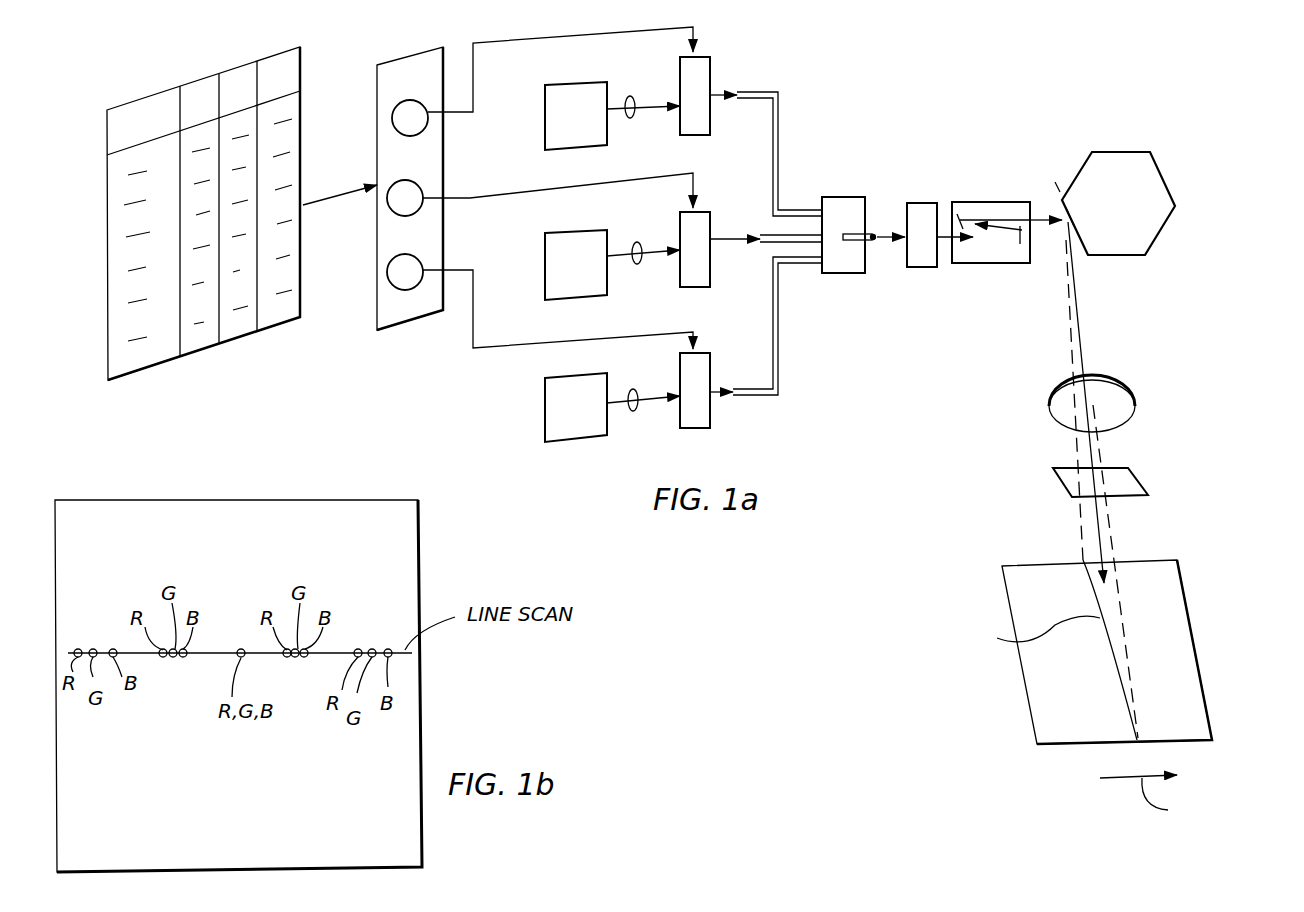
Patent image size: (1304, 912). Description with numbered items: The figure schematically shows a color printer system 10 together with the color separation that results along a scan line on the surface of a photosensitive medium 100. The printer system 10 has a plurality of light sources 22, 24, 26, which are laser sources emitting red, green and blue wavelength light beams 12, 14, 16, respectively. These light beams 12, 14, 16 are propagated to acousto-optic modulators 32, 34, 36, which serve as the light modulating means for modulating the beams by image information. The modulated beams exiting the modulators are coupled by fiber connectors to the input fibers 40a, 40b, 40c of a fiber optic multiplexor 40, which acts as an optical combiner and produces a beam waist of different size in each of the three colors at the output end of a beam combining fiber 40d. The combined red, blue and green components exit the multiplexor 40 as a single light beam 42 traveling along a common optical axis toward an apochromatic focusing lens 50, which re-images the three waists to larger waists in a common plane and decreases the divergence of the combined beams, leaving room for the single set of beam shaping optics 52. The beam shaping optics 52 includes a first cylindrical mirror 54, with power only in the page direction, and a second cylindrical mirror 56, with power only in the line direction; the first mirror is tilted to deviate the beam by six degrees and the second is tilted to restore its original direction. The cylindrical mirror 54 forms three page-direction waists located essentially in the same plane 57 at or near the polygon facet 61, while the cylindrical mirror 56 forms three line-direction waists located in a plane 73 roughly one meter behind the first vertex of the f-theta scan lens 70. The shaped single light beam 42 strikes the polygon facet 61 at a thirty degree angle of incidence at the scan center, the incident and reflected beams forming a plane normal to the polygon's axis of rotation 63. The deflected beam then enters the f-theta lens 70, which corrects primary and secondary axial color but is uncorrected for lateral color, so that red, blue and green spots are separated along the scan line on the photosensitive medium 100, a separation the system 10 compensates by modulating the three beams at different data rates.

In FIG. 1A, the printer system 10 is at (940, 102).
In FIG. 1A, the red wavelength light beam 12 is at (645, 100).
In FIG. 1A, the green wavelength light beam 14 is at (651, 247).
In FIG. 1A, the blue wavelength light beam 16 is at (652, 393).
In FIG. 1A, the light source 22 is at (542, 103).
In FIG. 1A, the light source 24 is at (542, 245).
In FIG. 1A, the light source 26 is at (543, 408).
In FIG. 1A, the acousto-optic modulator 32 is at (710, 60).
In FIG. 1A, the acousto-optic modulator 34 is at (712, 210).
In FIG. 1A, the acousto-optic modulator 36 is at (710, 413).
In FIG. 1A, the fiber optic multiplexor 40 is at (850, 273).
In FIG. 1A, the input fiber 40a is at (790, 208).
In FIG. 1A, the input fiber 40b is at (795, 235).
In FIG. 1A, the input fiber 40c is at (795, 267).
In FIG. 1A, the beam combining fiber 40d is at (872, 233).
In FIG. 1A, the single light beam 42 is at (885, 242).
In FIG. 1A, the apochromatic focusing lens 50 is at (920, 203).
In FIG. 1A, the beam shaping optics 52 is at (1008, 203).
In FIG. 1A, the first cylindrical mirror 54 is at (1022, 243).
In FIG. 1A, the second cylindrical mirror 56 is at (947, 217).
In FIG. 1A, the plane 57 is at (1057, 183).
In FIG. 1A, the polygon facet 61 is at (1082, 226).
In FIG. 1A, the axis of rotation 63 is at (1117, 200).
In FIG. 1A, the f-theta scan lens 70 is at (1120, 405).
In FIG. 1A, the plane 73 is at (1138, 478).
In FIG. 1A, the photosensitive medium 100 is at (1192, 627).
In FIG. 1B, the photosensitive medium 100 is at (424, 546).